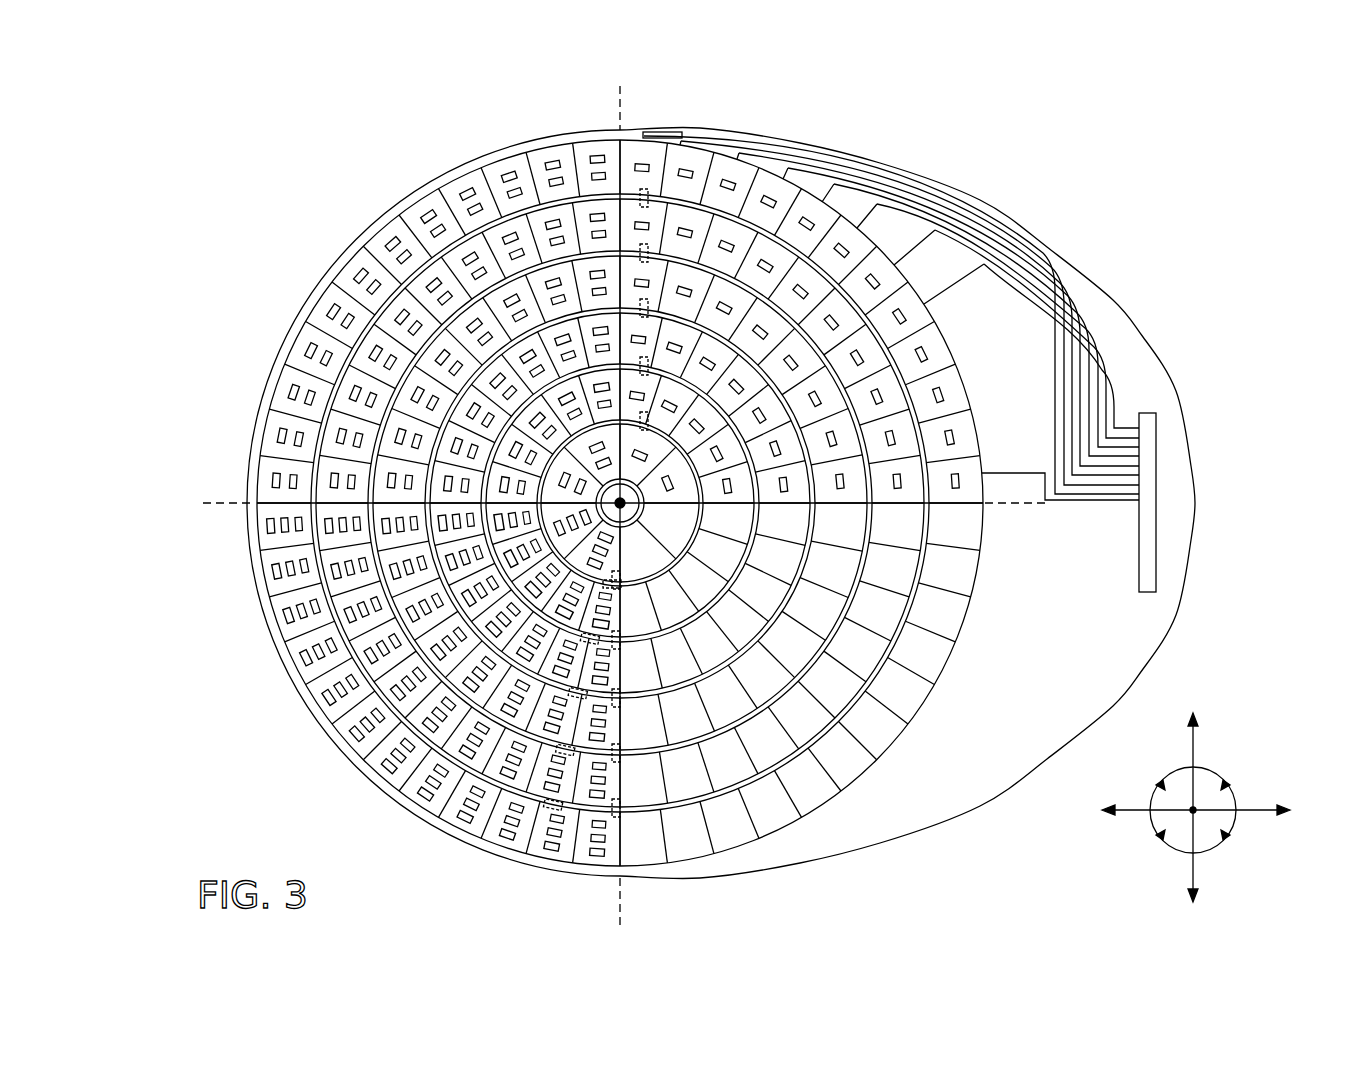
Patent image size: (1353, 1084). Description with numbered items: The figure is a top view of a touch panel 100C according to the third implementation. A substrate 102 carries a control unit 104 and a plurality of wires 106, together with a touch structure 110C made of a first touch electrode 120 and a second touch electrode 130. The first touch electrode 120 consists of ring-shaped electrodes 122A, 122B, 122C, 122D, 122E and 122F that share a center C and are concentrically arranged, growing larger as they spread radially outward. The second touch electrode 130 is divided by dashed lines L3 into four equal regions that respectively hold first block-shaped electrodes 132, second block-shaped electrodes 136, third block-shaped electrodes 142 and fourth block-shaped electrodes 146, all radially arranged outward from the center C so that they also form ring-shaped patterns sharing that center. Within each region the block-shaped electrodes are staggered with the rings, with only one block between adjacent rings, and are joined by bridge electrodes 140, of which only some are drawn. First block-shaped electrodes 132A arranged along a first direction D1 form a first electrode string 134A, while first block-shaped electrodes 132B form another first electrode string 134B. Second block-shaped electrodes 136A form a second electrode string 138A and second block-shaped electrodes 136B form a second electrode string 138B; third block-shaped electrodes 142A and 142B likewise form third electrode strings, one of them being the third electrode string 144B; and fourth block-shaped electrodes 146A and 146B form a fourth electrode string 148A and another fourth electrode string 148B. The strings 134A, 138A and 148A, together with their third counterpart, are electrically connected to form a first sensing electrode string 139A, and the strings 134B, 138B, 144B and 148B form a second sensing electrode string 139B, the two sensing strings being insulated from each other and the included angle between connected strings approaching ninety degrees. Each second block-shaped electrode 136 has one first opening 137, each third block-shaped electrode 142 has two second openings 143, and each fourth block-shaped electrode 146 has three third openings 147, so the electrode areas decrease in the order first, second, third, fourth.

The touch panel 100C is at (172, 110).
The substrate 102 is at (1196, 506).
The control unit 104 is at (1157, 437).
The wires 106 is at (1115, 367).
The touch structure 110C is at (255, 697).
The first touch electrode 120 is at (162, 250).
The ring-shaped electrode 122A is at (585, 480).
The ring-shaped electrode 122B is at (560, 445).
The ring-shaped electrode 122C is at (520, 400).
The ring-shaped electrode 122D is at (480, 348).
The ring-shaped electrode 122E is at (445, 292).
The ring-shaped electrode 122F is at (405, 240).
The second touch electrode 130 is at (1092, 65).
The first block-shaped electrode 132 is at (882, 728).
The first block-shaped electrode 132A is at (963, 540).
The first block-shaped electrode 132B is at (948, 583).
The first electrode string 134A is at (990, 540).
The first electrode string 134B is at (985, 590).
The second block-shaped electrode 136 is at (790, 175).
The second block-shaped electrode 136A is at (688, 105).
The second block-shaped electrode 136B is at (747, 160).
The first opening 137 is at (790, 197).
The second electrode string 138A is at (633, 128).
The second electrode string 138B is at (690, 135).
The first sensing electrode string 139A is at (1260, 65).
The second sensing electrode string 139B is at (1260, 188).
The bridge electrode 140 is at (640, 815).
The third block-shaped electrode 142 is at (386, 232).
The third block-shaped electrode 142A is at (251, 488).
The third block-shaped electrode 142B is at (255, 450).
The second opening 143 is at (396, 232).
The third electrode string 144B is at (267, 470).
The fourth block-shaped electrode 146 is at (314, 727).
The fourth block-shaped electrode 146A is at (606, 878).
The fourth block-shaped electrode 146B is at (572, 875).
The third opening 147 is at (312, 710).
The fourth electrode string 148A is at (585, 868).
The fourth electrode string 148B is at (522, 864).
The center C is at (606, 504).
The dashed line L3 is at (618, 90).
The first direction D1 is at (1195, 809).